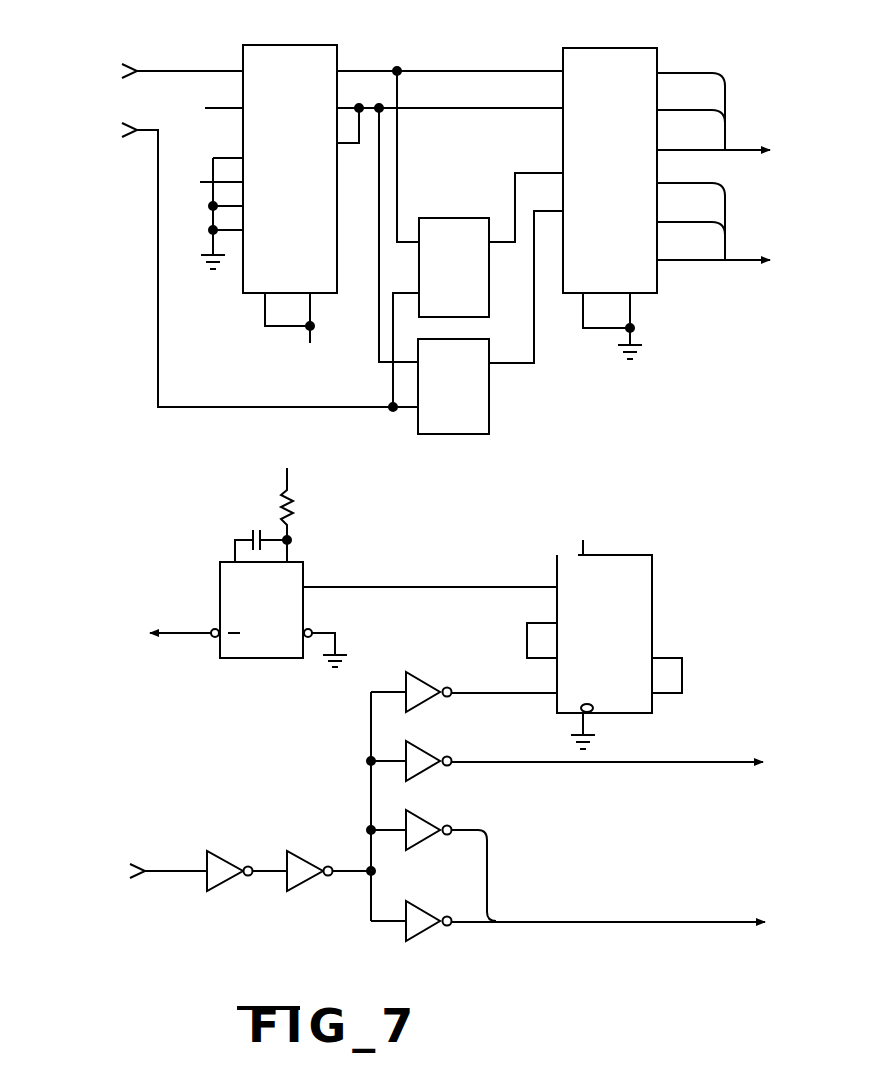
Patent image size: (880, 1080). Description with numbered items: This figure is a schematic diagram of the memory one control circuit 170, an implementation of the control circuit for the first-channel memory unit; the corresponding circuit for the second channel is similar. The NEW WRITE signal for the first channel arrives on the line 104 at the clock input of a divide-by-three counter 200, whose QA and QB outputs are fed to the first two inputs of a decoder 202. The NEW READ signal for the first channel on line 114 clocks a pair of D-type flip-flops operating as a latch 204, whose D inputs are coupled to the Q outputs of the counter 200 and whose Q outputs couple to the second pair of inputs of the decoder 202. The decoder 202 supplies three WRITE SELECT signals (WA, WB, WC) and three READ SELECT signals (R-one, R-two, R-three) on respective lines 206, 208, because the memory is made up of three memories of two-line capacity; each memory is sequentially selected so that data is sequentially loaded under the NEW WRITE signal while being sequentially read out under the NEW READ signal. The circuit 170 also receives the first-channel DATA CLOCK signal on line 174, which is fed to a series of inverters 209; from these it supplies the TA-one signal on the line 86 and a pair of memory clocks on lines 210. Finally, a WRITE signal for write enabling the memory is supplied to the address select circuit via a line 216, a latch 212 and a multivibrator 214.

The line 104 is at (148, 70).
The line 114 is at (143, 132).
The ÷3 counter 200 is at (296, 45).
The decoder 202 is at (594, 48).
The latch 204 is at (516, 378).
The line 206 is at (740, 150).
The line 208 is at (745, 263).
The memory 1 control circuit 170 is at (470, 527).
The multivibrator 214 is at (305, 567).
The line 216 is at (185, 633).
The latch 212 is at (655, 594).
The line 86 is at (700, 765).
The series of inverters 209 is at (493, 778).
The line 174 is at (170, 868).
The lines 210 is at (689, 925).